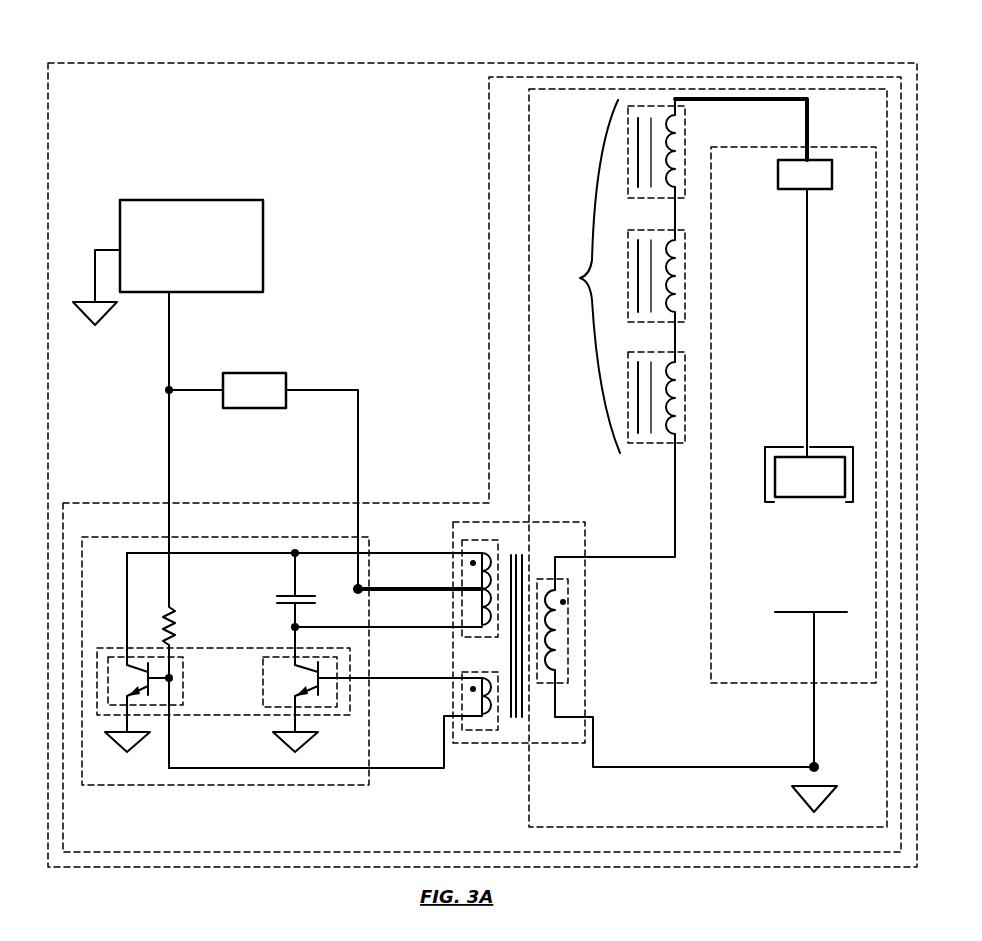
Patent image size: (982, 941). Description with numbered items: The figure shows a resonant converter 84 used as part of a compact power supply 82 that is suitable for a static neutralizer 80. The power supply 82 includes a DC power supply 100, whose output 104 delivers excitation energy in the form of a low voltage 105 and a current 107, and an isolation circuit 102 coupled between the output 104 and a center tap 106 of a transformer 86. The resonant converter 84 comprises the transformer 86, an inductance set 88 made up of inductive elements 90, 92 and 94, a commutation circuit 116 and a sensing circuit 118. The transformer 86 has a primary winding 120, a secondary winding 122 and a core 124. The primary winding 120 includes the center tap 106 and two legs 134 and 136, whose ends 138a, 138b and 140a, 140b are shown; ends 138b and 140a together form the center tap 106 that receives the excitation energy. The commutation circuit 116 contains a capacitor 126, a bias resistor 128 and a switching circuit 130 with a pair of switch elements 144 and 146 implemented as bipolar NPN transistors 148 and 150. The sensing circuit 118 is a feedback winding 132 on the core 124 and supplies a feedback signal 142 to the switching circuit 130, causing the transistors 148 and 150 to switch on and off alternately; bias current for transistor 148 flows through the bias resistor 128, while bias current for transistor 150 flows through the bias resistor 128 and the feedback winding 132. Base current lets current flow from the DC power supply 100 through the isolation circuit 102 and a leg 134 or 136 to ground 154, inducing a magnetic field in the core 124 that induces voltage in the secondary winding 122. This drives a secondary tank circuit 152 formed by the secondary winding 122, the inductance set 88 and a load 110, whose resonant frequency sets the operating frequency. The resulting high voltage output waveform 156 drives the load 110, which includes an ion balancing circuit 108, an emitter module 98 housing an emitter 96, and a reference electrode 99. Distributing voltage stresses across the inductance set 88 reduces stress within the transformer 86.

The static neutralizer 80 is at (792, 48).
The power supply 82 is at (128, 64).
The resonant converter 84 is at (290, 503).
The transformer 86 is at (578, 522).
The inductance set 88 is at (586, 276).
The inductive element 90 is at (655, 444).
The inductive element 92 is at (628, 290).
The inductive element 94 is at (634, 198).
The emitter 96 is at (840, 490).
The emitter module 98 is at (843, 447).
The reference electrode 99 is at (830, 613).
The DC power supply 100 is at (179, 295).
The isolation circuit 102 is at (263, 481).
The output 104 is at (169, 392).
The low voltage 105 is at (140, 378).
The center tap 106 is at (356, 588).
The current 107 is at (173, 366).
The ion balancing circuit 108 is at (753, 278).
The load 110 is at (711, 684).
The commutation circuit 116 is at (105, 537).
The sensing circuit 118 is at (475, 731).
The primary winding 120 is at (483, 551).
The secondary winding 122 is at (570, 683).
The core 124 is at (518, 554).
The capacitor 126 is at (280, 594).
The bias resistor 128 is at (172, 615).
The switching circuit 130 is at (222, 718).
The feedback winding 132 is at (484, 714).
The leg 134 is at (482, 548).
The leg 136 is at (486, 616).
The end 138a is at (378, 552).
The end 138b is at (388, 588).
The end 140a is at (392, 592).
The end 140b is at (387, 628).
The feedback signal 142 is at (406, 690).
The switch element 144 is at (183, 700).
The switch element 146 is at (263, 692).
The bipolar NPN transistor 148 is at (116, 664).
The bipolar NPN transistor 150 is at (284, 666).
The secondary tank circuit 152 is at (543, 89).
The ground 154 is at (94, 326).
The high voltage output waveform 156 is at (700, 108).